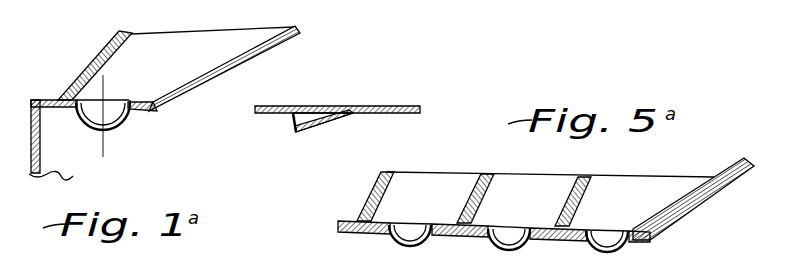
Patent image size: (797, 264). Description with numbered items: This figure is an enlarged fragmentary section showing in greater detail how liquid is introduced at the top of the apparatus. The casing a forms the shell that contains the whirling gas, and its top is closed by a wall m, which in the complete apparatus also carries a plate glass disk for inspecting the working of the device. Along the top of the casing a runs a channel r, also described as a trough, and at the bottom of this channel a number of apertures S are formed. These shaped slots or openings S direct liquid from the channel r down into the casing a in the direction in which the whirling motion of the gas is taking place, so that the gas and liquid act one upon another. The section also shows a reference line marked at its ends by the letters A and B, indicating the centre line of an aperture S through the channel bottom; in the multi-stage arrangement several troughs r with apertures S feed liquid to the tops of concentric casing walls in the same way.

In FIG. 1A, the casing a is at (40, 147).
In FIG. 1A, the channel r is at (88, 74).
In FIG. 5A, the channel r is at (384, 188).
In FIG. 1A, the wall m is at (220, 58).
In FIG. 5A, the wall m is at (733, 182).
In FIG. 1A, the apertures S is at (122, 115).
In FIG. 5A, the apertures S is at (423, 231).
In FIG. 1A, the reference point A is at (106, 87).
In FIG. 1A, the reference point B is at (109, 146).